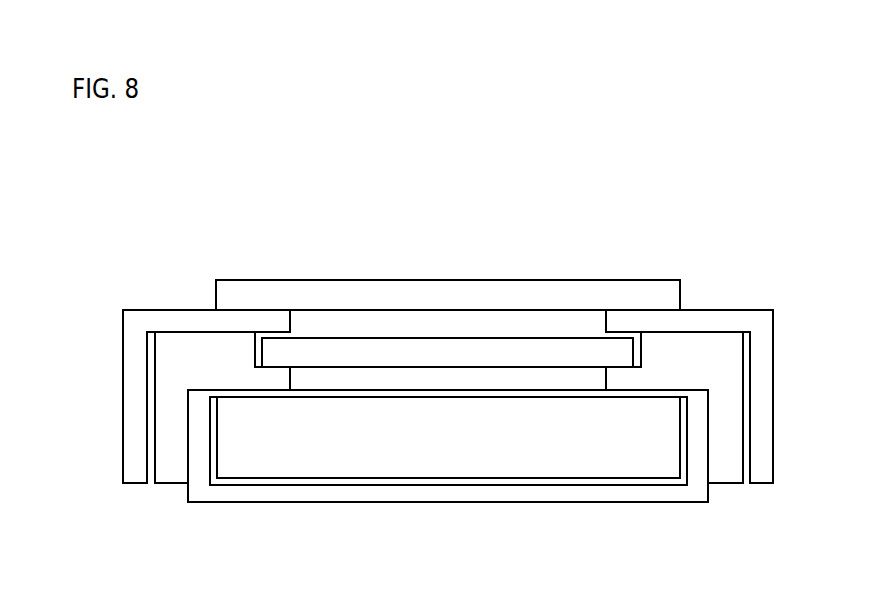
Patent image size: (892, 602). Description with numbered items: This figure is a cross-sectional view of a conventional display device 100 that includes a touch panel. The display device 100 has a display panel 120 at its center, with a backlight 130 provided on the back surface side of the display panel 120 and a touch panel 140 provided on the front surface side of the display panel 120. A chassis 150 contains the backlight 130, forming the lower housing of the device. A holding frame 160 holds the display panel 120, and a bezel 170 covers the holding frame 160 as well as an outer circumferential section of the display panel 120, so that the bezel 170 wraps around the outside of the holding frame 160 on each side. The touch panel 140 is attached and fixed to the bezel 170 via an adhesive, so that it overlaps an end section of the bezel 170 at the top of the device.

The display device 100 is at (708, 232).
The display panel 120 is at (446, 347).
The backlight 130 is at (615, 462).
The touch panel 140 is at (512, 295).
The chassis 150 is at (512, 493).
The holding frame 160 is at (165, 358).
The bezel 170 is at (133, 413).